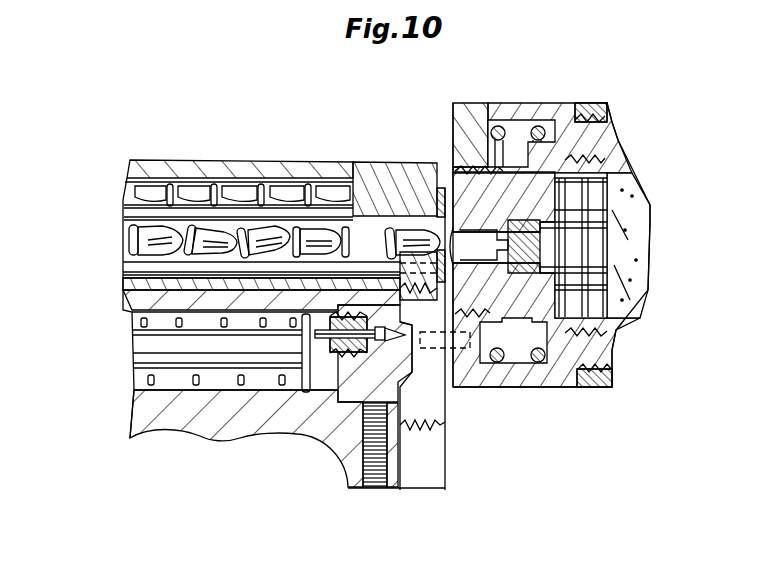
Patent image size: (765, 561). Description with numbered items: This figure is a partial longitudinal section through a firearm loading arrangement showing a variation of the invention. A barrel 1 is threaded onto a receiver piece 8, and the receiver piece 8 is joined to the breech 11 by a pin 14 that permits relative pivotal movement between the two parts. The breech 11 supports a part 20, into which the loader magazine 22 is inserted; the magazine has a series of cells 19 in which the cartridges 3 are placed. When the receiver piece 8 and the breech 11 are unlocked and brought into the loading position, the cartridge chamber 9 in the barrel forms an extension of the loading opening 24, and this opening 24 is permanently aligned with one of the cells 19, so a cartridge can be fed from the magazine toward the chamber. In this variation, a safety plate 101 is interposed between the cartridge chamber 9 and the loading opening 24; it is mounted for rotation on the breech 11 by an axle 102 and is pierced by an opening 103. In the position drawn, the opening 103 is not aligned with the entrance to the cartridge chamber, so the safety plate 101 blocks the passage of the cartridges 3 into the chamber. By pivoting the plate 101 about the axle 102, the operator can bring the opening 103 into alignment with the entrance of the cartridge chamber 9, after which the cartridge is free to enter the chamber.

The barrel 1 is at (620, 158).
The cartridges 3 is at (132, 245).
The receiver piece 8 is at (590, 352).
The cartridge chamber 9 is at (483, 243).
The breech 11 is at (376, 234).
The pin 14 is at (432, 343).
The cells 19 is at (129, 226).
The part 20 is at (268, 170).
The loader magazine 22 is at (190, 182).
The opening 24 is at (398, 228).
The safety plate 101 is at (462, 337).
The axle 102 is at (350, 303).
The opening 103 is at (468, 170).